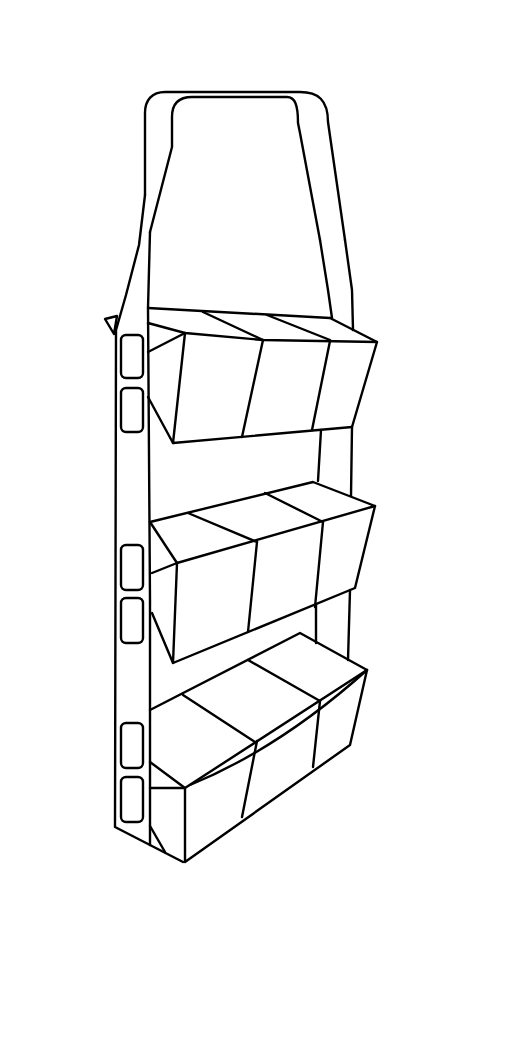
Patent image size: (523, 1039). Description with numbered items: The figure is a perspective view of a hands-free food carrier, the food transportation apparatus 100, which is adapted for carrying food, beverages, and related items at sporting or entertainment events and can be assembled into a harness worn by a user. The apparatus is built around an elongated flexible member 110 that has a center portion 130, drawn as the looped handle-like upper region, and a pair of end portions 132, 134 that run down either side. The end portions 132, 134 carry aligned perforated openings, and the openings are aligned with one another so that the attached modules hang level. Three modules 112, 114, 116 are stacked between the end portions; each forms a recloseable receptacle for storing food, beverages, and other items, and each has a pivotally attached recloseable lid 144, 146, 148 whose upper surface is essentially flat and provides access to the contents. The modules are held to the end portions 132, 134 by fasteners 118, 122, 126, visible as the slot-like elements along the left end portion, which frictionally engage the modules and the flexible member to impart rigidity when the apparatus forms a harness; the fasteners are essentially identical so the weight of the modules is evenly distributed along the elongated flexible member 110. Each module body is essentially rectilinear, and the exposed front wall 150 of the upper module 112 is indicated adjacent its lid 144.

The food transportation apparatus 100 is at (105, 68).
The elongated flexible member 110 is at (329, 134).
The module 112 is at (367, 383).
The module 114 is at (369, 549).
The module 116 is at (358, 717).
The fastener 118 is at (128, 355).
The fastener 122 is at (128, 568).
The fastener 126 is at (132, 743).
The center portion 130 is at (237, 93).
The end portion 132 is at (128, 487).
The end portion 134 is at (352, 462).
The recloseable lid 144 is at (233, 327).
The recloseable lid 146 is at (228, 518).
The recloseable lid 148 is at (343, 673).
The front wall 150 is at (325, 357).